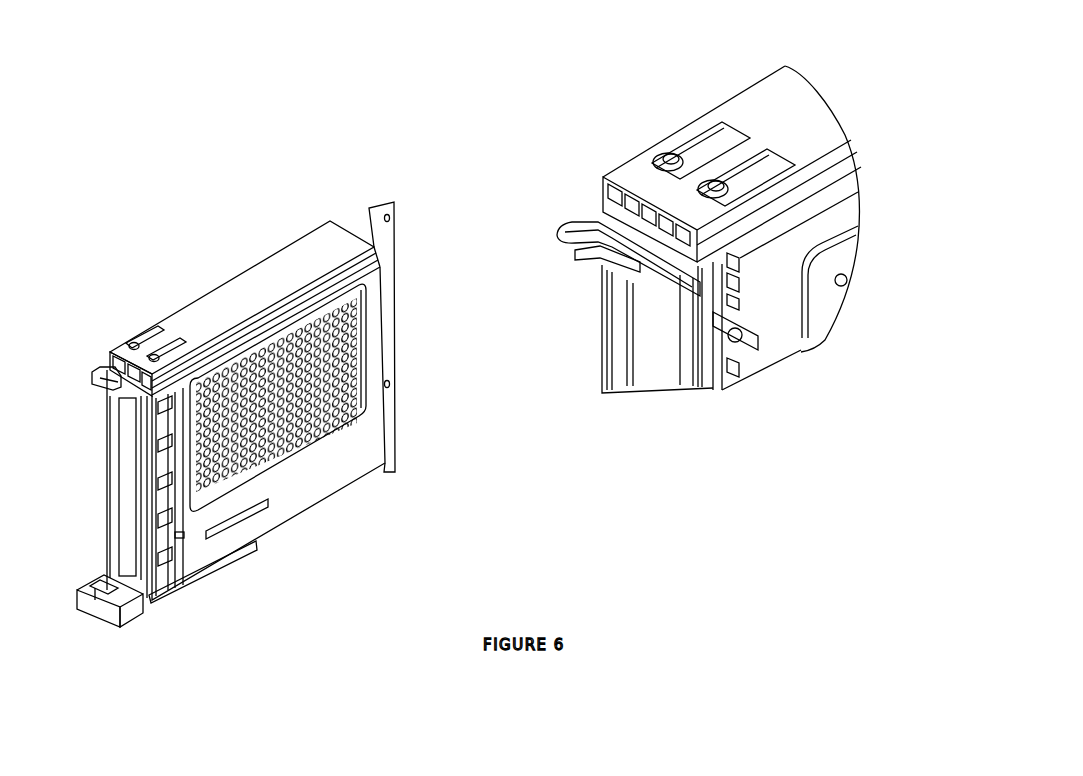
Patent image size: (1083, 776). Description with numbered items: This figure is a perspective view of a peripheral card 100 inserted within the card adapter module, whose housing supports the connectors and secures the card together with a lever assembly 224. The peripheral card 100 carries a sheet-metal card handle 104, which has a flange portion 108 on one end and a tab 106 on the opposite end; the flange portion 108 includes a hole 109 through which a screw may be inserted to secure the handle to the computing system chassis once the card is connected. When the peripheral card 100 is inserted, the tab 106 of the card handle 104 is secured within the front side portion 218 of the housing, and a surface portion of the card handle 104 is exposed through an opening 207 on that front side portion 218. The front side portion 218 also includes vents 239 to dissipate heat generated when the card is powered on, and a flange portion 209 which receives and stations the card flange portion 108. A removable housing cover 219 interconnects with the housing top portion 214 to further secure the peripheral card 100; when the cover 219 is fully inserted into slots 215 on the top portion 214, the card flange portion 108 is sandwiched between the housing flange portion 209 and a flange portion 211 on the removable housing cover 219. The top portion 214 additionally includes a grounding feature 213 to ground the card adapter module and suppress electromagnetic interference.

The peripheral card 100 is at (341, 305).
The card handle 104 is at (128, 482).
The tab 106 is at (144, 597).
The flange portion 108 is at (565, 282).
The hole 109 is at (605, 253).
The opening 207 is at (122, 453).
The flange portion 209 is at (598, 213).
The flange portion 211 is at (663, 285).
The grounding feature 213 is at (695, 483).
The top portion 214 is at (765, 98).
The slots 215 is at (819, 190).
The front side portion 218 is at (110, 533).
The removable housing cover 219 is at (355, 461).
The lever assembly 224 is at (134, 625).
The vents 239 is at (160, 507).